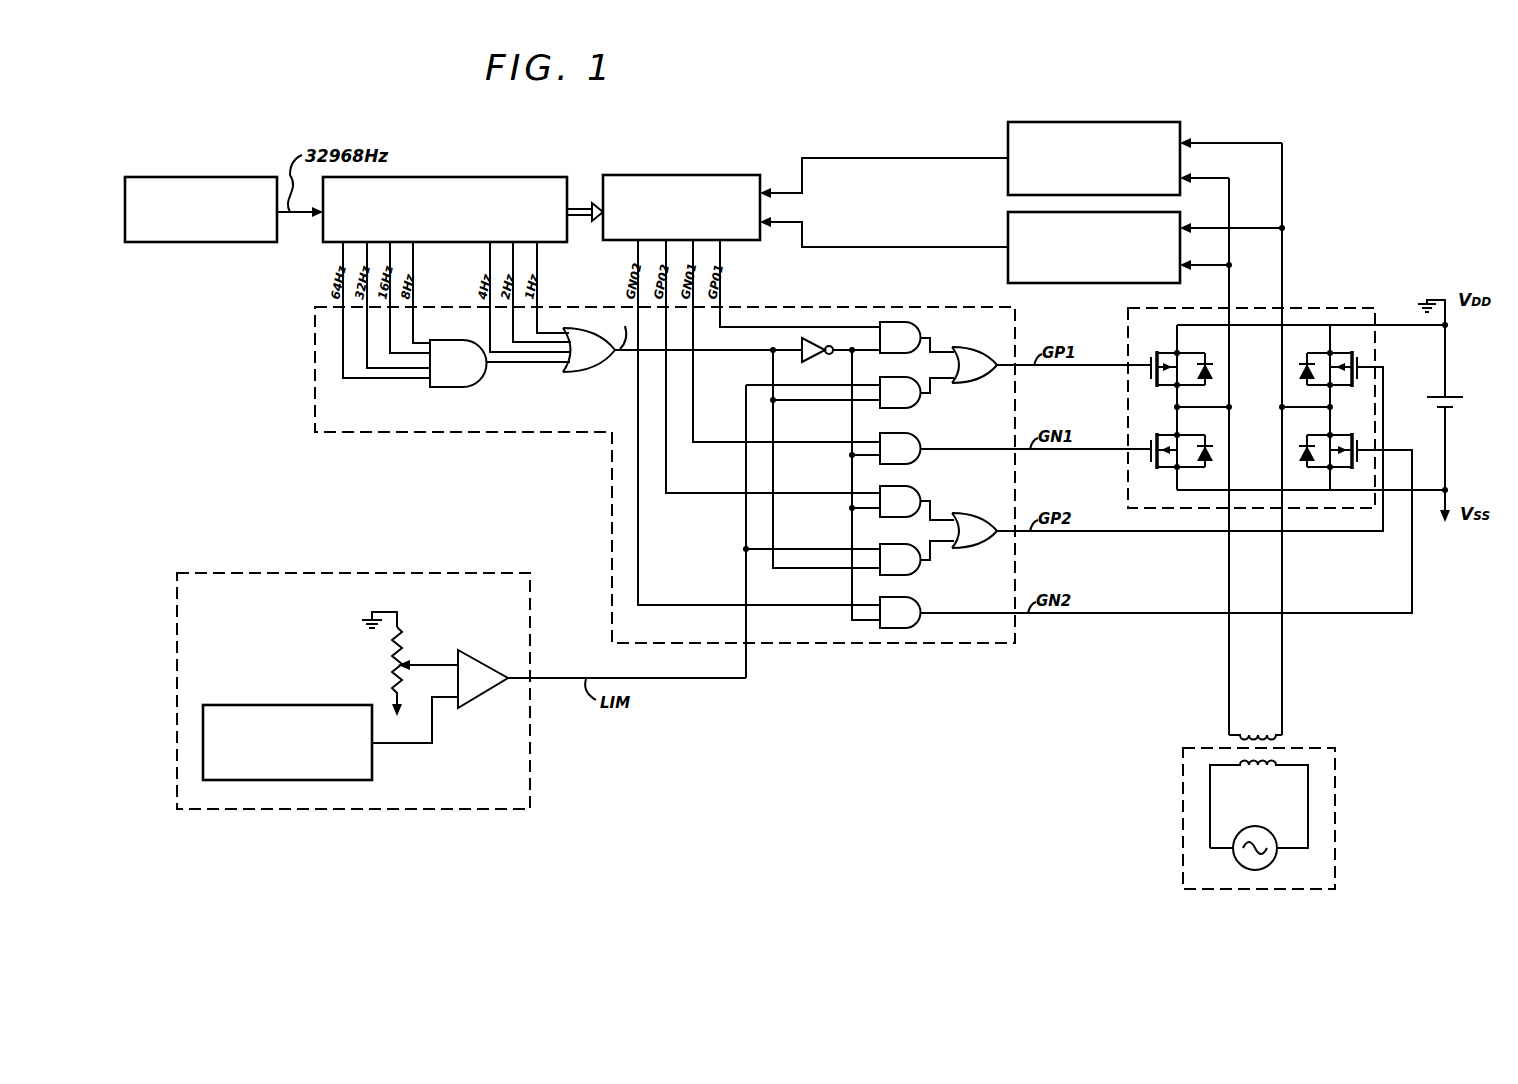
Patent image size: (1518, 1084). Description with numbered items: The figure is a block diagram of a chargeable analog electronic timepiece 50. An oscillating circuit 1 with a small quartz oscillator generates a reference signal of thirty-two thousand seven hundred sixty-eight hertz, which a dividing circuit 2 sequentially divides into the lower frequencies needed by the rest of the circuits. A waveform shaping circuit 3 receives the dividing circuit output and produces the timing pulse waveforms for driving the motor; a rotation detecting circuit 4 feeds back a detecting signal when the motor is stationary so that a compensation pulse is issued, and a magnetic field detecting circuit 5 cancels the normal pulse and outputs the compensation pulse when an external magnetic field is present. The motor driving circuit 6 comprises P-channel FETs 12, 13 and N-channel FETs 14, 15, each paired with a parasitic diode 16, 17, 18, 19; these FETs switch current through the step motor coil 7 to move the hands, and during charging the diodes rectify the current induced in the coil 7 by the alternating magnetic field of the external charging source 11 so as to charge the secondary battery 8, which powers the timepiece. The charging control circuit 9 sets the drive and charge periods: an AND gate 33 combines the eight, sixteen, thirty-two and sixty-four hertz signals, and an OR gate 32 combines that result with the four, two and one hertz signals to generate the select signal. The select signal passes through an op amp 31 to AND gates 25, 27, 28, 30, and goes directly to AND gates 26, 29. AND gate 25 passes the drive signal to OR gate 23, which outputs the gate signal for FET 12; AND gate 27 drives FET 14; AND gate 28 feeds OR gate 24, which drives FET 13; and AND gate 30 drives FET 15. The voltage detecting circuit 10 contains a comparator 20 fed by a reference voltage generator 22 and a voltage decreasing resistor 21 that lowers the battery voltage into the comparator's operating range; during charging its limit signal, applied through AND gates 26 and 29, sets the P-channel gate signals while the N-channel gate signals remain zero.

The oscillating circuit 1 is at (180, 178).
The dividing circuit 2 is at (440, 178).
The waveform shaping circuit 3 is at (655, 176).
The rotation detecting circuit 4 is at (1008, 140).
The magnetic field detecting circuit 5 is at (1008, 268).
The motor driving circuit 6 is at (1305, 308).
The step motor coil 7 is at (1270, 735).
The secondary battery 8 is at (1450, 398).
The charging control circuit 9 is at (855, 645).
The voltage detecting circuit 10 is at (385, 810).
The external charging source 11 is at (1330, 806).
The Pch MOS FET 12 is at (1152, 353).
The Pch MOS FET 13 is at (1353, 353).
The Nch MOS FET 14 is at (1152, 435).
The Nch MOS FET 15 is at (1353, 435).
The parasitic diode 16 is at (1208, 362).
The parasitic diode 17 is at (1302, 360).
The parasitic diode 18 is at (1208, 444).
The parasitic diode 19 is at (1302, 442).
The comparator 20 is at (505, 672).
The voltage decreasing resistor 21 is at (392, 658).
The reference voltage generator 22 is at (317, 707).
The OR gate 23 is at (968, 352).
The OR gate 24 is at (965, 520).
The AND gate 25 is at (910, 322).
The AND gate 26 is at (893, 386).
The AND gate 27 is at (898, 440).
The AND gate 28 is at (900, 490).
The AND gate 29 is at (892, 552).
The AND gate 30 is at (892, 605).
The op amp 31 is at (808, 358).
The OR gate 32 is at (578, 372).
The AND gate 33 is at (458, 387).
The chargeable analog electronic timepiece 50 is at (1342, 116).